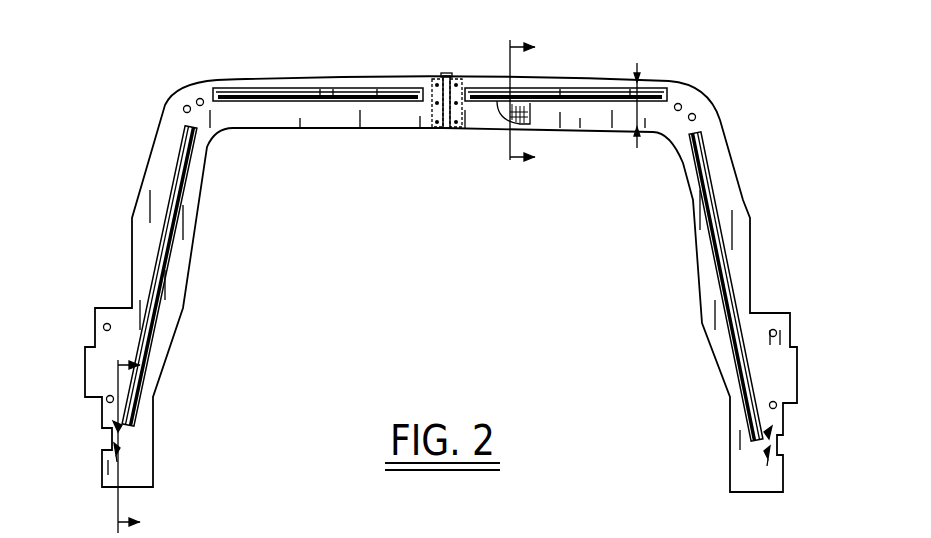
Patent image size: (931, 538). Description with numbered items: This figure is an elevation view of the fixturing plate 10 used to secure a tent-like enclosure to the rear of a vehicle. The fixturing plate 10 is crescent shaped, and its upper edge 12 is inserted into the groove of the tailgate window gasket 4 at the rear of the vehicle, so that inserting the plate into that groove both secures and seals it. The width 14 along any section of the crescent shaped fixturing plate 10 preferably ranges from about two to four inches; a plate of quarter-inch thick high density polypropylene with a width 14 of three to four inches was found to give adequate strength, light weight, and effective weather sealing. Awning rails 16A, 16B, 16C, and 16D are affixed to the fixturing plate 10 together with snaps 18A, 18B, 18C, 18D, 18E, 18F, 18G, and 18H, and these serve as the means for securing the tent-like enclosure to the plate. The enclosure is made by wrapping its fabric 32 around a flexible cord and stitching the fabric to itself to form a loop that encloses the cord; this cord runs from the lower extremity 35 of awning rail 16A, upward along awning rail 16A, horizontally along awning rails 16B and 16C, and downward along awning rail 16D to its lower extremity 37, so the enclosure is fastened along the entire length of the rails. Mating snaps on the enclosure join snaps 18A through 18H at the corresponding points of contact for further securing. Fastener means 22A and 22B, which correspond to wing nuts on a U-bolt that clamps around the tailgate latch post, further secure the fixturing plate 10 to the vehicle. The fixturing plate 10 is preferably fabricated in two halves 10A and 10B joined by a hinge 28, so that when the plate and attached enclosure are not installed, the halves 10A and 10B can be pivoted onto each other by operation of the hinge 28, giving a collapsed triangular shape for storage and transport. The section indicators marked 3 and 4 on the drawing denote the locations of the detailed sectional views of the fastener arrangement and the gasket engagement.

The fixturing plate 10 is at (128, 155).
The first half of fixturing plate 10A is at (383, 130).
The second half of fixturing plate 10B is at (540, 132).
The upper edge 12 is at (242, 80).
The width 14 is at (650, 132).
The awning rail 16A is at (169, 260).
The awning rail 16B is at (340, 102).
The awning rail 16C is at (628, 104).
The awning rail 16D is at (714, 259).
The snap 18A is at (106, 402).
The snap 18B is at (107, 323).
The snap 18C is at (184, 108).
The snap 18D is at (197, 100).
The snap 18E is at (681, 105).
The snap 18F is at (696, 116).
The snap 18G is at (774, 329).
The snap 18H is at (777, 407).
The fastener means 22A is at (120, 447).
The fastener means 22B is at (763, 453).
The hinge 28 is at (445, 130).
The fabric 32 is at (505, 113).
The lower extremity of awning rail 35 is at (130, 427).
The lower extremity of awning rail 37 is at (753, 447).
The section line 3- 3 is at (119, 449).
The tailgate window gasket 4 is at (514, 101).